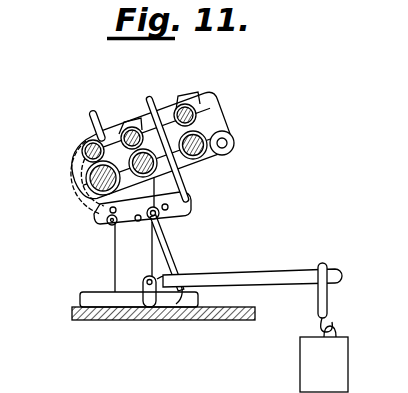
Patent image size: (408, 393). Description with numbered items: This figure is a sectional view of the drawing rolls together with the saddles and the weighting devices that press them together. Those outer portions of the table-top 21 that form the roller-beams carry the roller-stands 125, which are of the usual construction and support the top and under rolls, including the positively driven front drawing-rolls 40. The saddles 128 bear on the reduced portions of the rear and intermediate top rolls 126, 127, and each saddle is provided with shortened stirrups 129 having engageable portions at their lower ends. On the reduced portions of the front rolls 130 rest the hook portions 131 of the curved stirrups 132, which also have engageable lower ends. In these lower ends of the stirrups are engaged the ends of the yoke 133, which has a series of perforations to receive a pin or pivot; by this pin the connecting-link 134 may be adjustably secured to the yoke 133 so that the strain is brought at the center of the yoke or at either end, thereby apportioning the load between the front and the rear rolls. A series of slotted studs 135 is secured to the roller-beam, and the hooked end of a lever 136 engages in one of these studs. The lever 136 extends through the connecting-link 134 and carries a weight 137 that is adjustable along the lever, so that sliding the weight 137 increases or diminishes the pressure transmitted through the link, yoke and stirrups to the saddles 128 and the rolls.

The table-top 21 is at (250, 309).
The front drawing-rolls 40 is at (84, 197).
The roller-stands 125 is at (133, 257).
The rear end intermediate top roll 126 is at (122, 115).
The rear end intermediate top roll 127 is at (183, 106).
The saddles 128 is at (208, 100).
The shortened stirrups 129 is at (189, 200).
The front rolls 130 is at (84, 151).
The hook portions 131 is at (91, 140).
The curved stirrups 132 is at (79, 180).
The yoke 133 is at (170, 211).
The connecting-link 134 is at (169, 255).
The slotted studs 135 is at (146, 300).
The lever 136 is at (263, 263).
The weights 137 is at (324, 364).